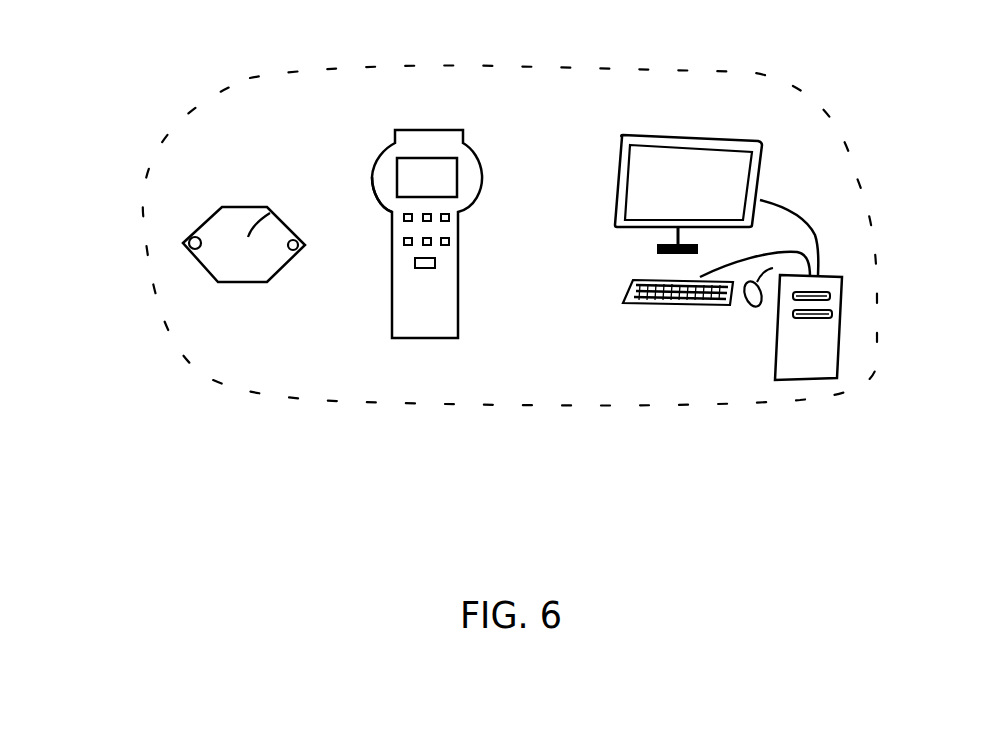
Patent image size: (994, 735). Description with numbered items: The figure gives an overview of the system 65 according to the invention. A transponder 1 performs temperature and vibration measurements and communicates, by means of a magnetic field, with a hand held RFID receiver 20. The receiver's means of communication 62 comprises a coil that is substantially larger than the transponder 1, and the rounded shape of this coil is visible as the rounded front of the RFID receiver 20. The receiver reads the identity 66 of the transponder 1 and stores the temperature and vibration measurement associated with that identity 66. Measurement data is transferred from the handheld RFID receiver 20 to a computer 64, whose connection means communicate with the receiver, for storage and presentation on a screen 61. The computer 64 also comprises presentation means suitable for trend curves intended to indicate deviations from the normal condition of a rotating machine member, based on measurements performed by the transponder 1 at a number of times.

The transponder 1 is at (227, 197).
The identity 66 is at (301, 47).
The means of communication 62 is at (388, 156).
The screen 61 is at (445, 174).
The handheld RFID receiver 20 is at (464, 305).
The computer 64 is at (765, 330).
The system 65 is at (612, 387).